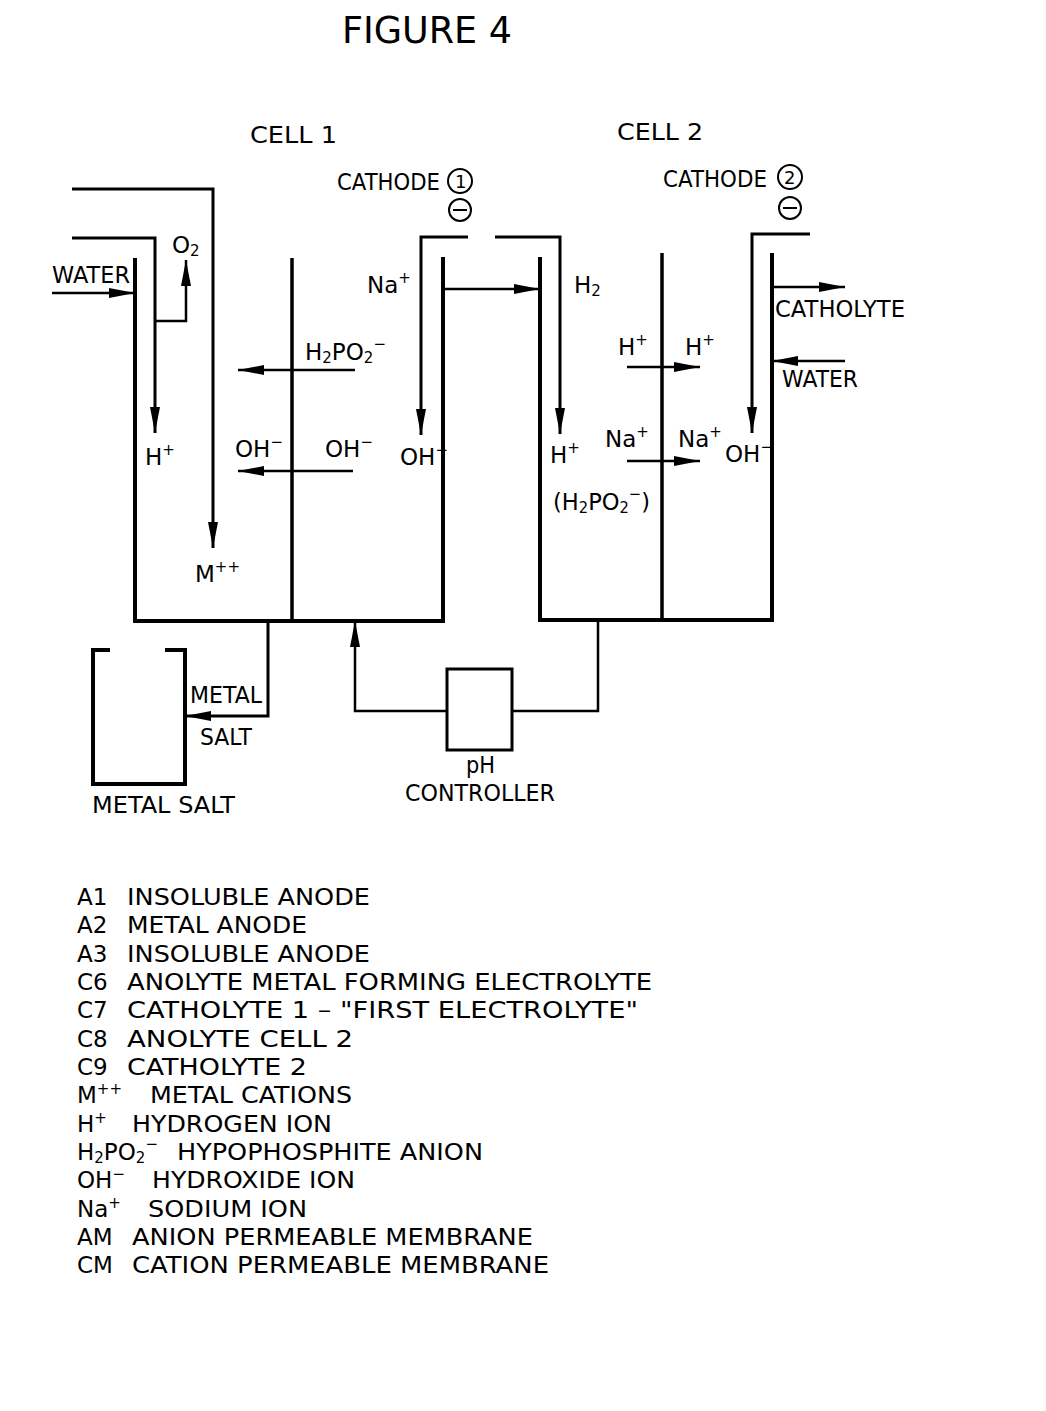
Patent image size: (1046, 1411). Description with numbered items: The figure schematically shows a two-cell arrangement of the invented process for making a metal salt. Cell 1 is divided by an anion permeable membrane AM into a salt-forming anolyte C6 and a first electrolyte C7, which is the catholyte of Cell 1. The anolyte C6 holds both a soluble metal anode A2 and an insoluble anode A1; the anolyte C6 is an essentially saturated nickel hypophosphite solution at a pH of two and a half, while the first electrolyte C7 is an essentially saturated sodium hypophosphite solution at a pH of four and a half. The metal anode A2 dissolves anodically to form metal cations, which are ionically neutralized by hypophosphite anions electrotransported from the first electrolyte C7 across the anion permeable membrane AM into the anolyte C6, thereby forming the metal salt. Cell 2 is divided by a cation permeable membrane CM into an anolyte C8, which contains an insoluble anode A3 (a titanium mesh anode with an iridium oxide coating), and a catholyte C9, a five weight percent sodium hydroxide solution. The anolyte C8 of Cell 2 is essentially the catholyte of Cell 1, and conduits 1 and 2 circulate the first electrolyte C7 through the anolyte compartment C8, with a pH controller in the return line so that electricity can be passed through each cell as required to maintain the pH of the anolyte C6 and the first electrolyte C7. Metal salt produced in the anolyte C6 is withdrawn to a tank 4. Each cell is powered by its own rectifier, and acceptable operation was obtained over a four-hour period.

The conduit 1 is at (491, 274).
The conduit 2 is at (476, 685).
The metal salt tank 4 is at (139, 717).
The insoluble anode A1 is at (131, 229).
The metal anode A2 is at (131, 179).
The insoluble anode A3 is at (544, 223).
The anolyte metal forming electrolyte C6 is at (213, 439).
The catholyte 1 - first electrolyte C7 is at (367, 439).
The anolyte cell 2 C8 is at (601, 438).
The catholyte 2 C9 is at (717, 436).
The anion permeable membrane AM is at (291, 424).
The cation permeable membrane CM is at (661, 421).